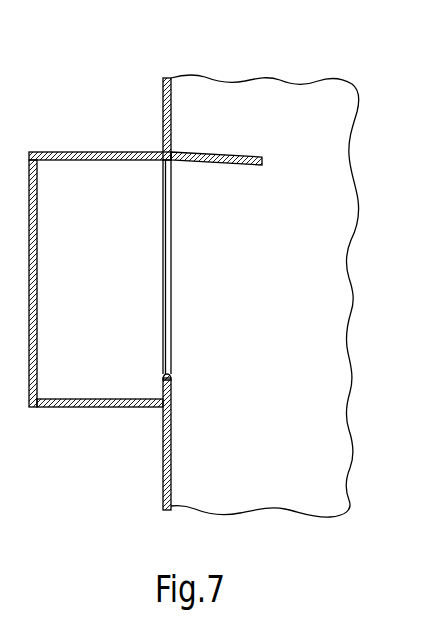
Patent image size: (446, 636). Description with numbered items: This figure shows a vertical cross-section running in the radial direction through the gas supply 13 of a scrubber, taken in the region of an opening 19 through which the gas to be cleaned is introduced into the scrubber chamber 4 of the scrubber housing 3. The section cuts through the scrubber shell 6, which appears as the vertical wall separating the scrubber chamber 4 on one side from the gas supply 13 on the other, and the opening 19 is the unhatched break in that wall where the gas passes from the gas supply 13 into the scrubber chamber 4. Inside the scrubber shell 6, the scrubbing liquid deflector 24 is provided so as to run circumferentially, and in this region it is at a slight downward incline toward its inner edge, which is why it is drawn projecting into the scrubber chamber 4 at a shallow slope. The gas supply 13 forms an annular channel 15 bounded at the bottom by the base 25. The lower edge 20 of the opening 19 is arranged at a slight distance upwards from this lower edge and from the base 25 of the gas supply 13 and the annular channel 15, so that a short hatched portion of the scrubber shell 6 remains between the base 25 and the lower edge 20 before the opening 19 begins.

The scrubber housing 3 is at (133, 467).
The scrubber chamber 4 is at (316, 293).
The scrubber shell 6 is at (172, 437).
The gas supply 13 is at (161, 214).
The annular channel 15 is at (100, 279).
The opening 19 is at (168, 301).
The lower edge of the opening 20 is at (171, 374).
The scrubbing liquid deflector 24 is at (233, 165).
The base 25 is at (113, 398).